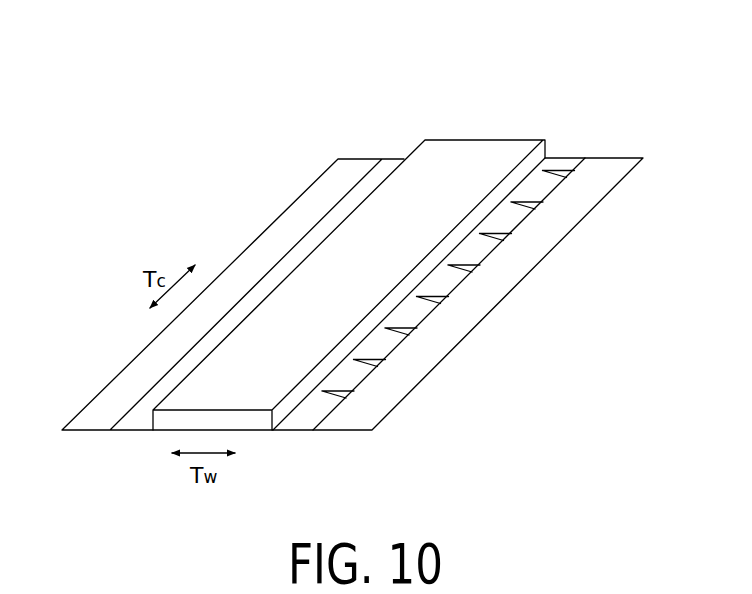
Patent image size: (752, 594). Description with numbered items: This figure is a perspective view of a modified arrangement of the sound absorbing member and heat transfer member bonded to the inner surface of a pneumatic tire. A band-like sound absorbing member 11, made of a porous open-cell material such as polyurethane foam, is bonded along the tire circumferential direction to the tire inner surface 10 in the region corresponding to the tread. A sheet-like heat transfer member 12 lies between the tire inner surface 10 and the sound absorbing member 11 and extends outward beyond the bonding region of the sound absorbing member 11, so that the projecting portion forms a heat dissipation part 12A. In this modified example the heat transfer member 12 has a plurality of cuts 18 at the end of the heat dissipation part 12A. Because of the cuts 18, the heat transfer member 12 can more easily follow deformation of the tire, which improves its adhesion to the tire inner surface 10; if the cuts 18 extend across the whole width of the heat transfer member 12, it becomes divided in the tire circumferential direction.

The tire inner surface 10 is at (547, 238).
The sound absorbing member 11 is at (487, 156).
The heat transfer member 12 is at (483, 239).
The heat dissipation part 12A is at (575, 163).
The cuts 18 is at (462, 275).